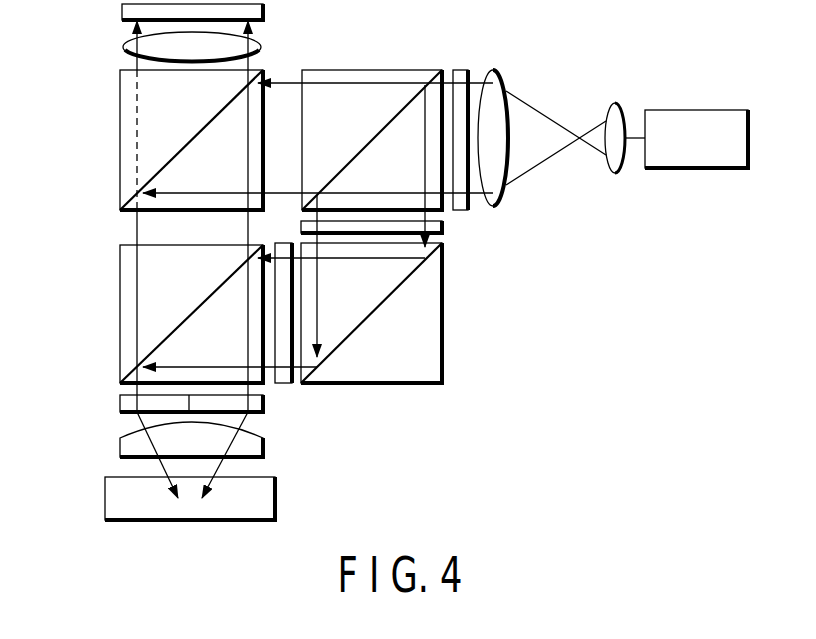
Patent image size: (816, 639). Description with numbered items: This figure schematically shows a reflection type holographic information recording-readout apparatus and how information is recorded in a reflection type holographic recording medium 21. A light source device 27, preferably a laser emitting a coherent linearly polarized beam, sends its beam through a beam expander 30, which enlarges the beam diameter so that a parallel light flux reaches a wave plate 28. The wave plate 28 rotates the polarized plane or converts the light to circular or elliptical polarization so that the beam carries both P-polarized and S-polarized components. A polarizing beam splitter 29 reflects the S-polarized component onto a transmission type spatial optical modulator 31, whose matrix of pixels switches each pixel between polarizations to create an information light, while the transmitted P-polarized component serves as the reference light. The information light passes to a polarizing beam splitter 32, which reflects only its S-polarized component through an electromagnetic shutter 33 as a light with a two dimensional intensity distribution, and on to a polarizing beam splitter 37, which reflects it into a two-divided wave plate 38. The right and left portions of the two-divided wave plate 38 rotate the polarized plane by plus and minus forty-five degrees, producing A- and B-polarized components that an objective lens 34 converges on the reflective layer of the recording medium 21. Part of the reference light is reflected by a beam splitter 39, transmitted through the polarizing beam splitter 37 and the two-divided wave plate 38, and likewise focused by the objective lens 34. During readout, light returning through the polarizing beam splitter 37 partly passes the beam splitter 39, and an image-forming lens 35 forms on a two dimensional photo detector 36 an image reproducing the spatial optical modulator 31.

The reflection type holographic recording medium 21 is at (105, 506).
The light source device 27 is at (700, 110).
The wave plate 28 is at (460, 70).
The polarizing beam splitter 29 is at (378, 70).
The beam expander 30 is at (480, 70).
The transmission type spatial optical modulator 31 is at (442, 226).
The polarizing beam splitter 32 is at (442, 318).
The electromagnetic shutter 33 is at (284, 383).
The objective lens 34 is at (120, 447).
The image-forming lens 35 is at (123, 47).
The two dimensional photo detector 36 is at (122, 12).
The polarizing beam splitter 37 is at (120, 318).
The two-divided wave plate 38 is at (120, 403).
The beam splitter 39 is at (120, 145).